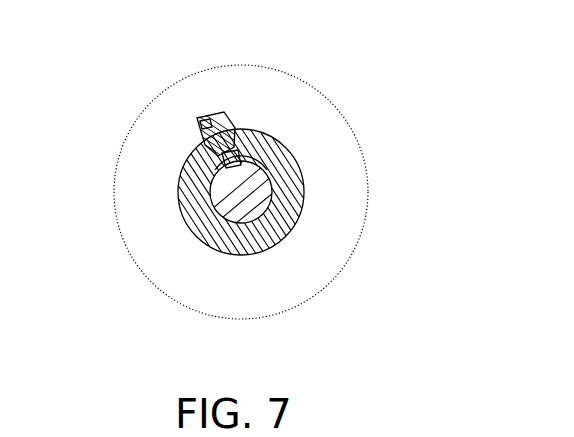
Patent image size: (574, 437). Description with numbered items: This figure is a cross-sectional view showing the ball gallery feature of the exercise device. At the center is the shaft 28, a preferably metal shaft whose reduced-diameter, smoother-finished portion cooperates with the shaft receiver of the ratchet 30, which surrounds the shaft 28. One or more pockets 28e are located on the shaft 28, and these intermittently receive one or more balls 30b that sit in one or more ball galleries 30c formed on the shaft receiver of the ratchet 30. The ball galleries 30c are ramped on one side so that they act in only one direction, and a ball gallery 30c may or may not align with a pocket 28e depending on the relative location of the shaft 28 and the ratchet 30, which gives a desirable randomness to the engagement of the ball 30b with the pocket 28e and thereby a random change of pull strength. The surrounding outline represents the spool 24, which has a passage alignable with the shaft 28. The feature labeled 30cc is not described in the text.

The spool 24 is at (147, 113).
The shaft 28 is at (260, 204).
The pocket 28e is at (241, 165).
The ratchet 30 is at (188, 209).
The ball 30b is at (228, 161).
The ball gallery 30c is at (237, 160).
The collar tab 30cc is at (223, 117).